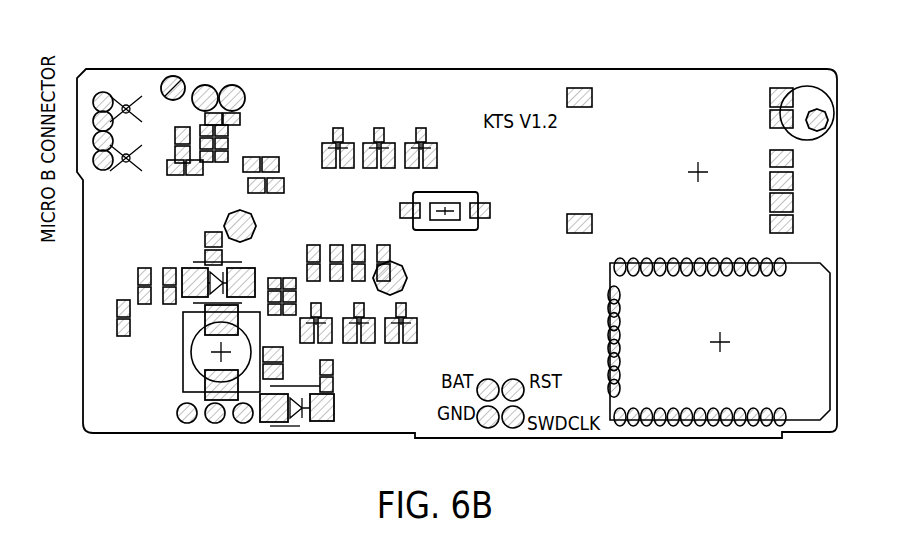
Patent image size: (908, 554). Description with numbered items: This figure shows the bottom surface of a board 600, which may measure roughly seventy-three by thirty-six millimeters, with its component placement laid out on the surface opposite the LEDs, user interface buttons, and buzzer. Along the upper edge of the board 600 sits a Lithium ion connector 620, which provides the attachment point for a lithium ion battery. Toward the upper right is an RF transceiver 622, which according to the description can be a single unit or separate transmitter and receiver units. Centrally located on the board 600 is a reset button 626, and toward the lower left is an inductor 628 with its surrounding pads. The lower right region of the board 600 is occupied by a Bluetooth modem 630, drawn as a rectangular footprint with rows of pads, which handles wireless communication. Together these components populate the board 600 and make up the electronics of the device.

The board 600 is at (738, 82).
The Lithium ion connector 620 is at (237, 90).
The RF transceiver 622 is at (667, 120).
The reset button 626 is at (480, 194).
The inductor 628 is at (202, 372).
The Bluetooth modem 630 is at (807, 413).